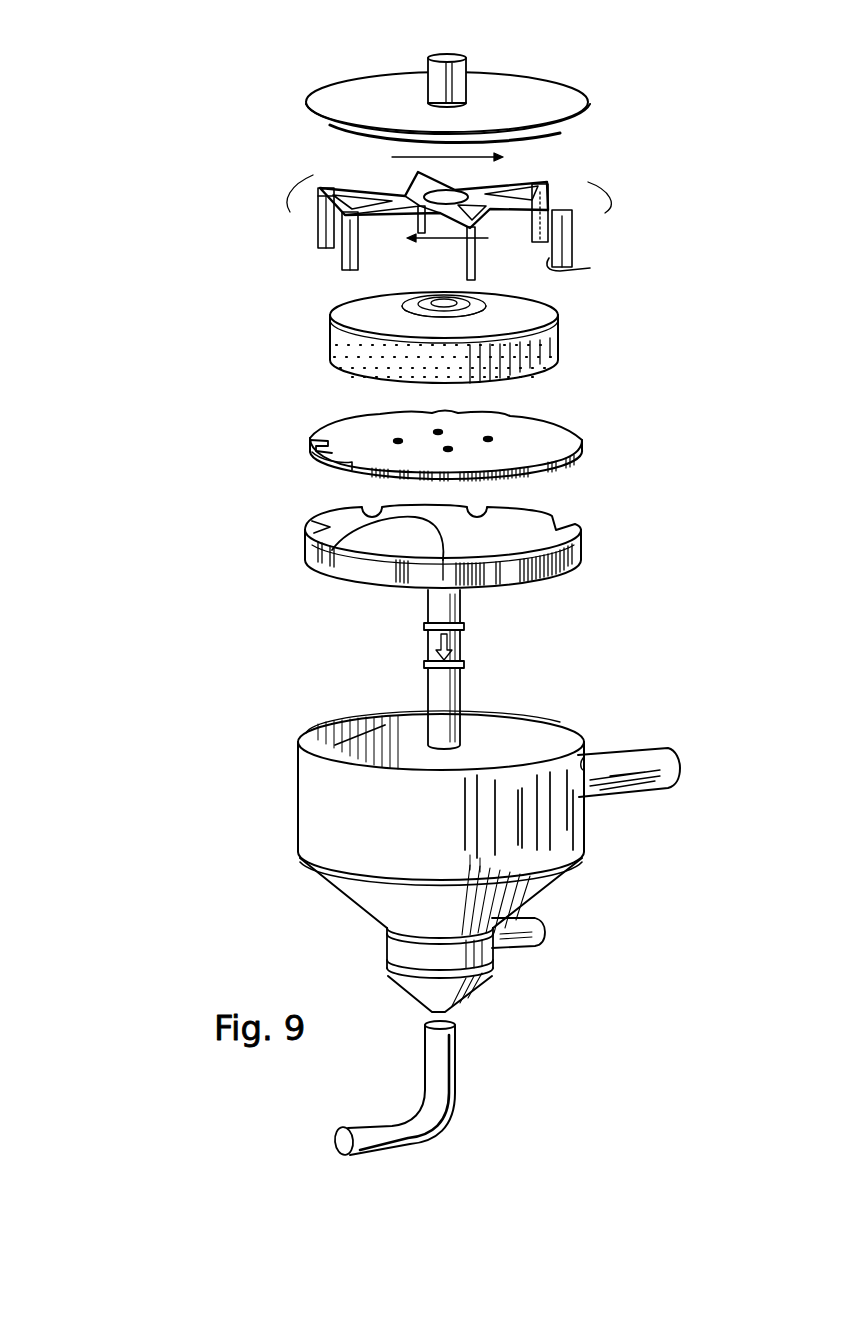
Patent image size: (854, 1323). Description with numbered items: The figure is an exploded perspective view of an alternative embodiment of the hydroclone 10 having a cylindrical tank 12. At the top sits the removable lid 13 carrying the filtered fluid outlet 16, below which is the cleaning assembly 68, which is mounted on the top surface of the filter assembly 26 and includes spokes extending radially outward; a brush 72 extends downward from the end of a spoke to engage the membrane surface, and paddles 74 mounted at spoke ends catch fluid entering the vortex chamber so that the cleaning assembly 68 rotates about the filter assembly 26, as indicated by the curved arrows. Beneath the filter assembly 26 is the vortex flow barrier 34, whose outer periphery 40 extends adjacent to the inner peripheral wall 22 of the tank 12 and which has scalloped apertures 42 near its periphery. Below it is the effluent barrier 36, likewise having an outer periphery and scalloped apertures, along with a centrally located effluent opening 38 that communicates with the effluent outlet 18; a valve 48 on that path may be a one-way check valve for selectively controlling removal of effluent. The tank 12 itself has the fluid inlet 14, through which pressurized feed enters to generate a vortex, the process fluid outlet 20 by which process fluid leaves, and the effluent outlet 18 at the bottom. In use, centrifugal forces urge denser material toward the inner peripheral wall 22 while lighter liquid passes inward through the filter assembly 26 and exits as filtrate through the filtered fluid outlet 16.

The hydroclone 10 is at (185, 332).
The tank 12 is at (449, 836).
The removable lid 13 is at (390, 92).
The fluid inlet 14 is at (625, 795).
The filtered fluid outlet 16 is at (456, 68).
The effluent outlet 18 is at (456, 1057).
The process fluid outlet 20 is at (518, 945).
The inner peripheral wall 22 is at (370, 718).
The filter assembly 26 is at (552, 347).
The vortex flow barrier 34 is at (424, 424).
The effluent barrier 36 is at (426, 540).
The effluent opening 38 is at (318, 555).
The outer periphery 40 is at (577, 455).
The apertures 42 is at (350, 460).
The valve 48 is at (457, 645).
The cleaning assembly 68 is at (483, 217).
The brush 72 is at (590, 268).
The paddles 74 is at (565, 250).